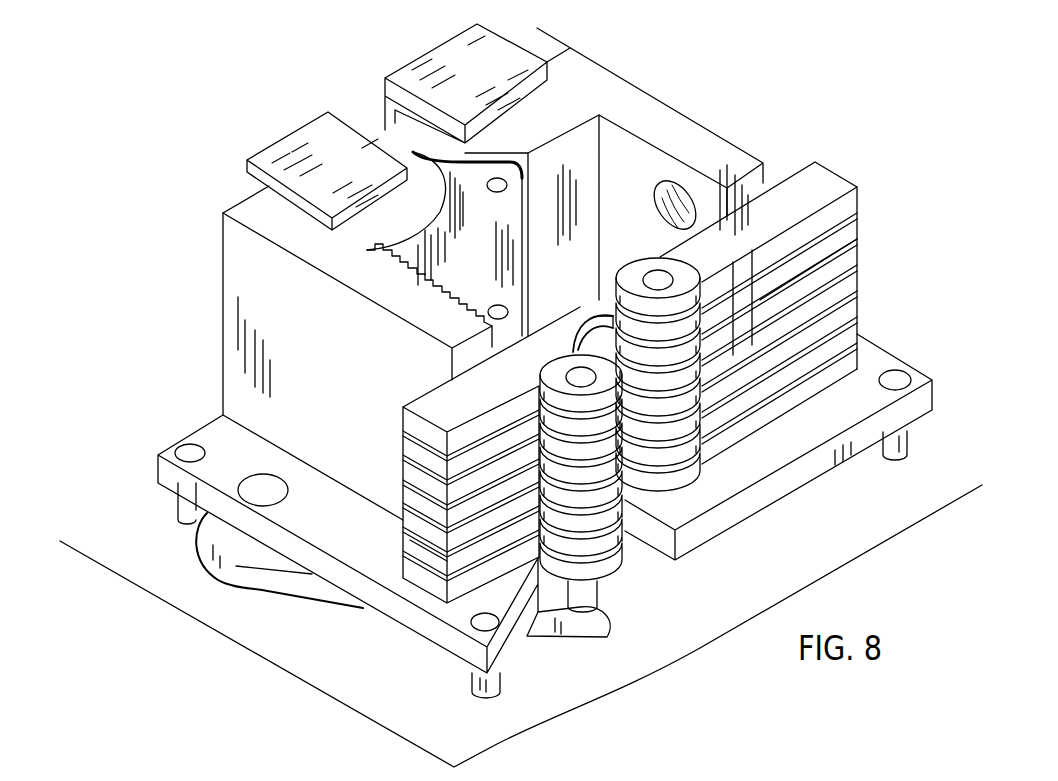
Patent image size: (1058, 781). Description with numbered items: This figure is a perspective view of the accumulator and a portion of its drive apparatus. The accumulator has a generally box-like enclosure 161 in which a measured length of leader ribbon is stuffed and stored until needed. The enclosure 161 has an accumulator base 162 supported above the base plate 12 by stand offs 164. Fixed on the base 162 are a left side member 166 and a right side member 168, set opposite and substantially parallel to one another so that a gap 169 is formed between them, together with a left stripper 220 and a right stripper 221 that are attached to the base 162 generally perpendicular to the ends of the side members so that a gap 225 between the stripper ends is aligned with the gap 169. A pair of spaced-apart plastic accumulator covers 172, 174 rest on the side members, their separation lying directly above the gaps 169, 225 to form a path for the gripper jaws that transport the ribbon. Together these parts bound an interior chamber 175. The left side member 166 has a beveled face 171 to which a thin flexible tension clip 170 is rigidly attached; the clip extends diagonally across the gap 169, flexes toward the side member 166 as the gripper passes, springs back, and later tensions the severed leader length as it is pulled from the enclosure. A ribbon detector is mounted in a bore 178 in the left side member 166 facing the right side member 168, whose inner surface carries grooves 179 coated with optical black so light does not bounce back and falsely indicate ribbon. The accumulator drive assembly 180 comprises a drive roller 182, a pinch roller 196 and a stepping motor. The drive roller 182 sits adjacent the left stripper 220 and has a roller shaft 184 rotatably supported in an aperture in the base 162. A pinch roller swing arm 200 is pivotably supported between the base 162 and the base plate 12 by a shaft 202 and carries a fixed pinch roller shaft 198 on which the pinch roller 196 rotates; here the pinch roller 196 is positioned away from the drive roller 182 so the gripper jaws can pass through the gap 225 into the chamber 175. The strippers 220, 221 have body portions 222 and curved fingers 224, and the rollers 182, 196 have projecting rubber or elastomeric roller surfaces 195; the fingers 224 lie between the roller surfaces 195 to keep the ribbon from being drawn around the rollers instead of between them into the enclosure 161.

The base plate 12 is at (297, 661).
The accumulator enclosure 161 is at (223, 241).
The accumulator base 162 is at (222, 432).
The stand offs 164 is at (178, 513).
The left side member 166 is at (539, 33).
The right side member 168 is at (240, 282).
The gap 169 is at (372, 113).
The tension clip 170 is at (492, 172).
The beveled face 171 is at (512, 130).
The accumulator cover 172 is at (437, 55).
The accumulator cover 174 is at (316, 126).
The interior chamber 175 is at (597, 140).
The bore 178 is at (670, 190).
The grooves 179 is at (400, 278).
The accumulator drive assembly 180 is at (688, 498).
The drive roller 182 is at (676, 263).
The roller shaft 184 is at (658, 272).
The projecting roller surfaces 195 is at (628, 579).
The pinch roller 196 is at (554, 370).
The pinch roller shaft 198 is at (594, 598).
The pinch roller swing arm 200 is at (243, 586).
The shaft 202 is at (272, 498).
The left stripper 220 is at (825, 175).
The right stripper 221 is at (437, 393).
The body portions 222 is at (842, 233).
The curved fingers 224 is at (572, 332).
The gap 225 is at (606, 292).